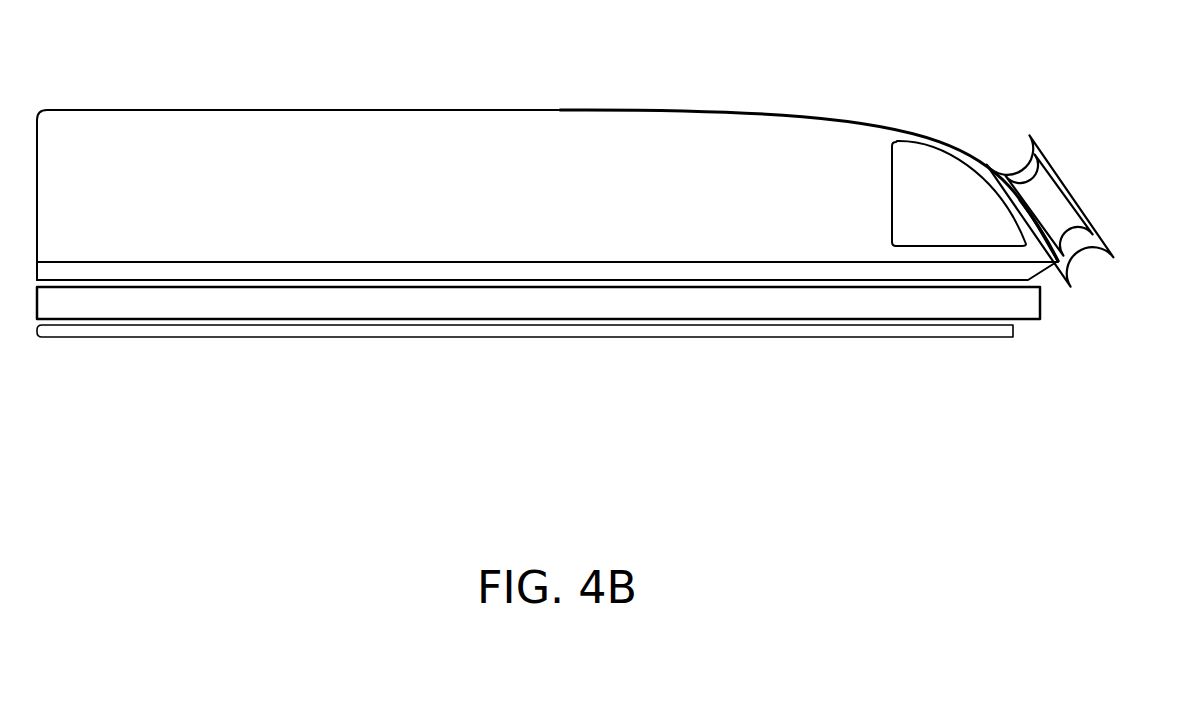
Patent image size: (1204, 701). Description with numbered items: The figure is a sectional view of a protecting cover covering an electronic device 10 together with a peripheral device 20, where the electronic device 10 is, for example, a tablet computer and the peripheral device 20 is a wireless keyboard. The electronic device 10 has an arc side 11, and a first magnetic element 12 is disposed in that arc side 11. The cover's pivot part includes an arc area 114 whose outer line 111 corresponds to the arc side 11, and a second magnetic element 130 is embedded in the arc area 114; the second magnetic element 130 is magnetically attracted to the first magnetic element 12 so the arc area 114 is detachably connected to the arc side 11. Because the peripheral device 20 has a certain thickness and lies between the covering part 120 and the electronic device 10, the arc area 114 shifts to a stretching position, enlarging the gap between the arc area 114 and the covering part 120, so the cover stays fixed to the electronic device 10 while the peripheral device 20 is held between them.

The electronic device 10 is at (768, 109).
The arc side 11 is at (1022, 200).
The first magnetic element 12 is at (915, 168).
The peripheral device 20 is at (1028, 308).
The outer line 111 is at (1040, 213).
The arc area 114 is at (1093, 193).
The covering part 120 is at (847, 332).
The second magnetic element 130 is at (1040, 165).